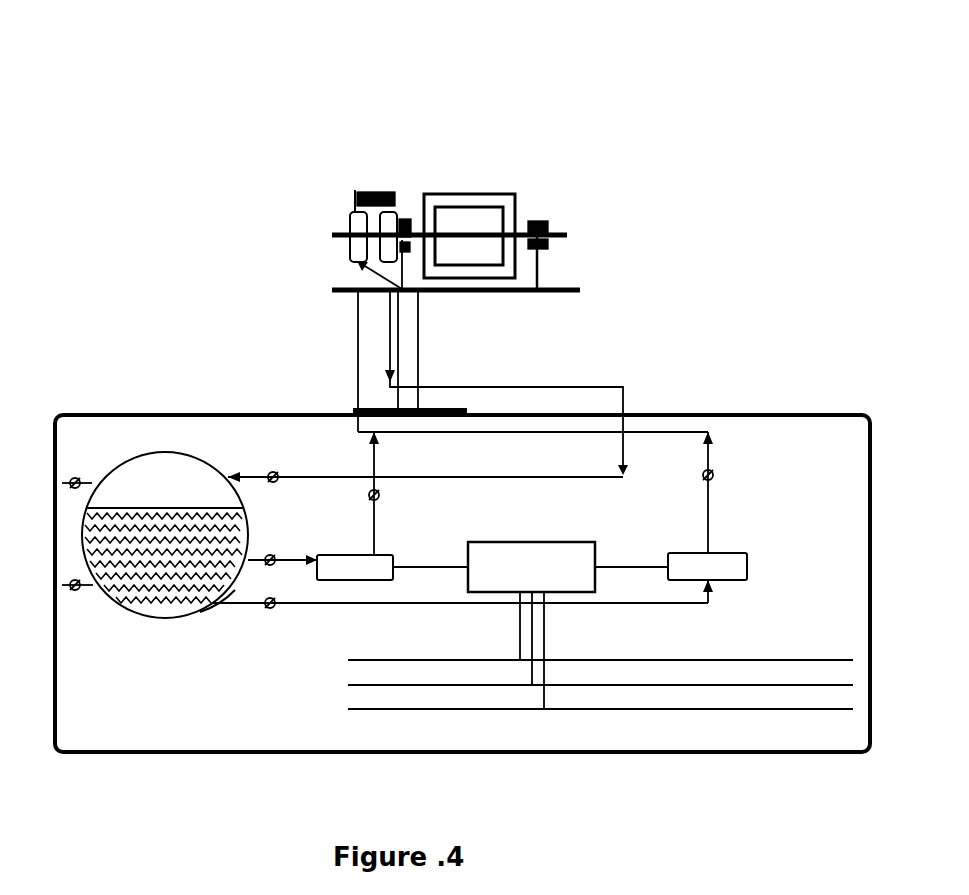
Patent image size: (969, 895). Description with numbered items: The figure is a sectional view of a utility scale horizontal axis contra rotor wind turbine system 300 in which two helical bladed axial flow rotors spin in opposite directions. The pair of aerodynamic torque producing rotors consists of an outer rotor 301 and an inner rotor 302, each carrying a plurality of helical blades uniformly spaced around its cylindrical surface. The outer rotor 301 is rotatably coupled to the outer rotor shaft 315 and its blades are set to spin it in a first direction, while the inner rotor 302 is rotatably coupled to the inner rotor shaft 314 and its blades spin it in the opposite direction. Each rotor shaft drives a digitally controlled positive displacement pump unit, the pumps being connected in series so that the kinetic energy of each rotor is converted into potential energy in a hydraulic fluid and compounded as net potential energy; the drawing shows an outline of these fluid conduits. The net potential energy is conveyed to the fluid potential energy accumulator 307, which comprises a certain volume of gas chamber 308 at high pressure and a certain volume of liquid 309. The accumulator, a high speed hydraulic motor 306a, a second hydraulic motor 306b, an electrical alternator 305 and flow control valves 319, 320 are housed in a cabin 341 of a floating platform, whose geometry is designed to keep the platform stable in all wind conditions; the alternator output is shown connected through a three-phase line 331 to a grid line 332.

The horizontal axis contra rotor wind turbine system 300 is at (128, 90).
The outer rotor 301 is at (515, 199).
The inner rotor 302 is at (430, 195).
The alternator 305 is at (582, 558).
The first motor 306a is at (398, 557).
The second motor 306b is at (740, 583).
The fluid potential energy accumulator 307 is at (204, 610).
The gas chamber 308 is at (192, 470).
The liquid 309 is at (158, 616).
The inner rotor shaft 314 is at (567, 233).
The outer rotor shaft 315 is at (550, 252).
The first valve 319 is at (370, 491).
The second valve 320 is at (715, 478).
The three-phase line 331 is at (470, 645).
The grid line 332 is at (730, 690).
The cabin 341 is at (843, 411).